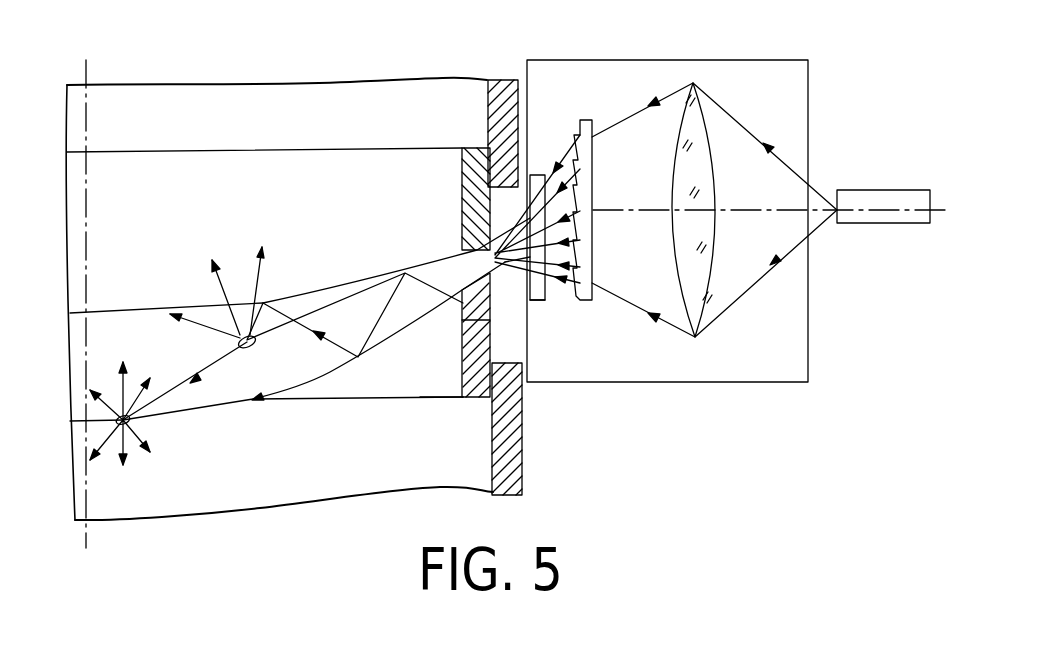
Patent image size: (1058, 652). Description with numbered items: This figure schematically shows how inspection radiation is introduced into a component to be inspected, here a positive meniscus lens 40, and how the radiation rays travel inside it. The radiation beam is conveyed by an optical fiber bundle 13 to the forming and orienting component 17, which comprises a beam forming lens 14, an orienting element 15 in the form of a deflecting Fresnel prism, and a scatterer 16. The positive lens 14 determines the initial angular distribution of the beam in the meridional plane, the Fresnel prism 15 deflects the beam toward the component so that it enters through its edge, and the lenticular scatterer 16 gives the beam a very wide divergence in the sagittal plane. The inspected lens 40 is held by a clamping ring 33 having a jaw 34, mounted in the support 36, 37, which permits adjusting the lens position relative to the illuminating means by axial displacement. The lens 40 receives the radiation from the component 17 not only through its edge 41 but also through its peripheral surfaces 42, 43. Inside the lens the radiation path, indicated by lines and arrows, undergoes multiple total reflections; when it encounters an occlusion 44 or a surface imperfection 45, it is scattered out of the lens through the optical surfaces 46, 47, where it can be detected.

The optical fiber bundle 13 is at (870, 200).
The beam forming lens 14 is at (705, 145).
The orienting element (Fresnel prism) 15 is at (586, 128).
The scatterer 16 is at (537, 175).
The forming and orienting component 17 is at (737, 382).
The clamping ring 33 is at (462, 178).
The jaw 34 is at (475, 283).
The support 36 is at (504, 82).
The support 37 is at (522, 472).
The positive meniscus lens 40 is at (153, 337).
The edge 41 is at (505, 264).
The peripheral surface 42 is at (540, 300).
The peripheral surface 43 is at (514, 245).
The occlusion 44 is at (247, 350).
The surface imperfection 45 is at (135, 420).
The optical surface 46 is at (257, 283).
The optical surface 47 is at (118, 393).